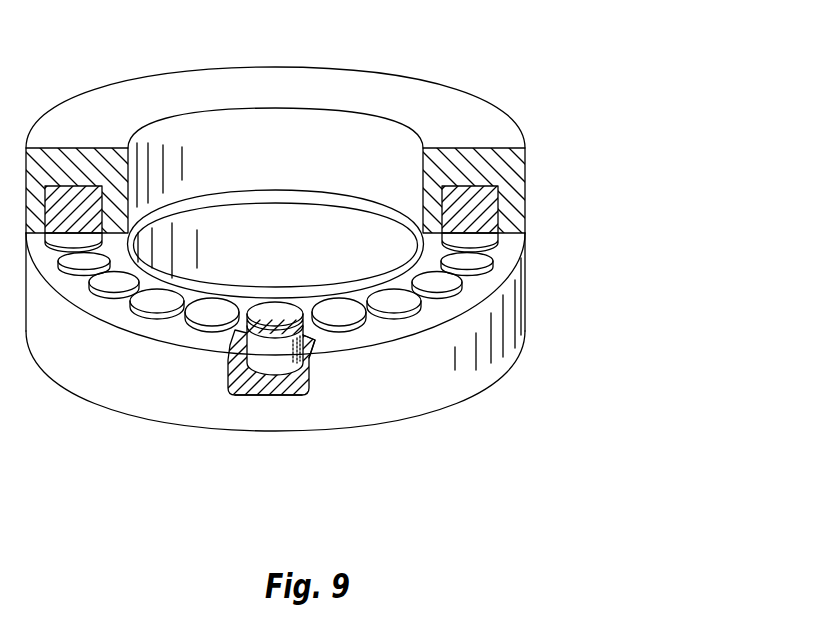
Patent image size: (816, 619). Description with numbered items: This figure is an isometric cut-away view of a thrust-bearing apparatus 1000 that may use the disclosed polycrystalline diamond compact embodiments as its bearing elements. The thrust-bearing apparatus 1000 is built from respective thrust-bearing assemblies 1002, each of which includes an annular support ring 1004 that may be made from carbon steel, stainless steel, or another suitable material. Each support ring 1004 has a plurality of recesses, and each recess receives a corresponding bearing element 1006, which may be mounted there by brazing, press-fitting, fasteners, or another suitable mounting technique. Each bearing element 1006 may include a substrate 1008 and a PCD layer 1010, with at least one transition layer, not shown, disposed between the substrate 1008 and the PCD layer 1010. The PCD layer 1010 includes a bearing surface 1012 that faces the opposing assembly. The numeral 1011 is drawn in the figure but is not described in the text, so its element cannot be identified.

The thrust-bearing apparatus 1000 is at (500, 67).
The thrust-bearing assembly 1002 is at (538, 211).
The annular support ring 1004 is at (527, 178).
The bearing element 1006 is at (278, 353).
The substrate 1008 is at (300, 395).
The PCD layer 1010 is at (232, 347).
The cage bottom web 1011 is at (257, 395).
The bearing surface 1012 is at (233, 320).